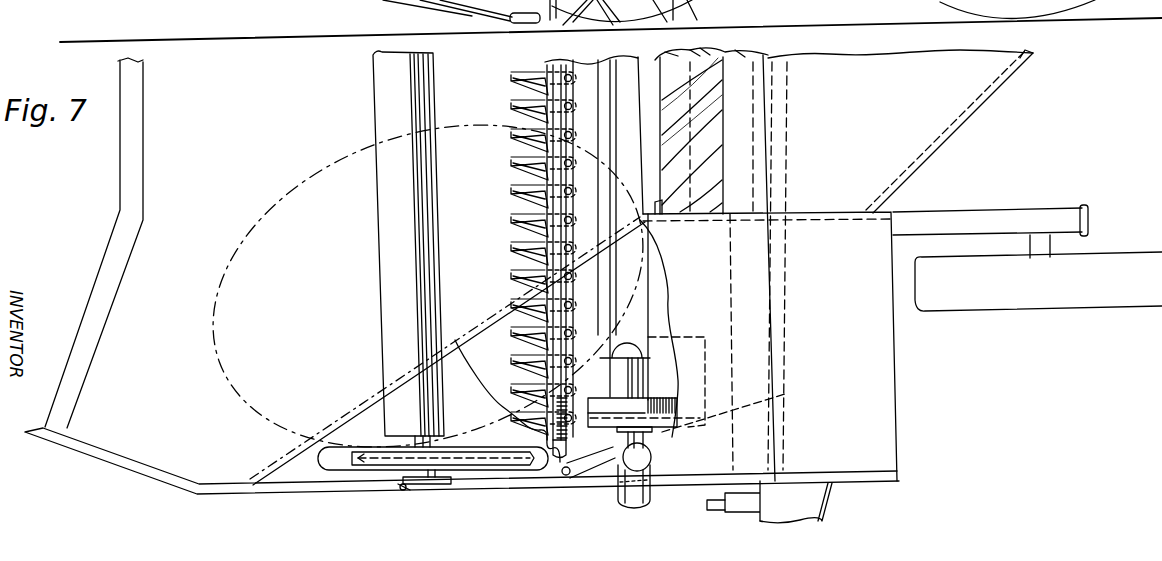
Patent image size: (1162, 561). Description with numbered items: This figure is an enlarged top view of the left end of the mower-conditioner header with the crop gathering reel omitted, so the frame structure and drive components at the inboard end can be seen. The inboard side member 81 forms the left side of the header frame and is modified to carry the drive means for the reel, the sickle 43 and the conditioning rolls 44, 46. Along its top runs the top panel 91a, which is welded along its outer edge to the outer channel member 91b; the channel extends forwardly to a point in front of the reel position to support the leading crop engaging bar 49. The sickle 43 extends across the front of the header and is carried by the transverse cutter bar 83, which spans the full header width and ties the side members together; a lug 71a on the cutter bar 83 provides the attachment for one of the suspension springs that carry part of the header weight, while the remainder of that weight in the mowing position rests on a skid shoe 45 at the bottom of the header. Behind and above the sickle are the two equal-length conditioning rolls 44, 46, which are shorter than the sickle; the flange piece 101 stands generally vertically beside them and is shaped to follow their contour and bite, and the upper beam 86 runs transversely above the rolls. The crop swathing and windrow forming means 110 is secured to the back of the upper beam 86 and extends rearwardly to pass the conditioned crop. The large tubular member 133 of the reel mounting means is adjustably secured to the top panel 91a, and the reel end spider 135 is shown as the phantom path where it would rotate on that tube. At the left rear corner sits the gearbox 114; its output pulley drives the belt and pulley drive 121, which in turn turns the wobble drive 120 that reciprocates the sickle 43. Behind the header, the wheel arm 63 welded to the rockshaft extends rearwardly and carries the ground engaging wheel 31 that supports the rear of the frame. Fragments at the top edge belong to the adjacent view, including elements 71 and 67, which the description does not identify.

The leading crop engaging bar 49 is at (141, 93).
The tubular member 133 is at (374, 87).
The end spider 135 is at (282, 231).
The sickle 43 is at (512, 83).
The cutter bar 83 is at (585, 22).
The lug 71a is at (612, 25).
The conditioning roll 44 is at (672, 40).
The auger 71 is at (684, 30).
The conditioning roll 46 is at (770, 51).
The crop swathing and windrow forming means 110 is at (996, 100).
The wheel arm 63 is at (965, 217).
The ground engaging wheel 31 is at (1014, 303).
The upper beam 86 is at (762, 407).
The side member 81 is at (916, 450).
The gearbox 114 is at (815, 503).
The belt and pulley drive 121 is at (627, 420).
The wobble drive 120 is at (617, 496).
The flange piece 101 is at (647, 220).
The outer channel member 91b is at (127, 460).
The top panel 91a is at (290, 473).
The skid shoe 45 is at (690, 11).
The hub 67 is at (765, 0).